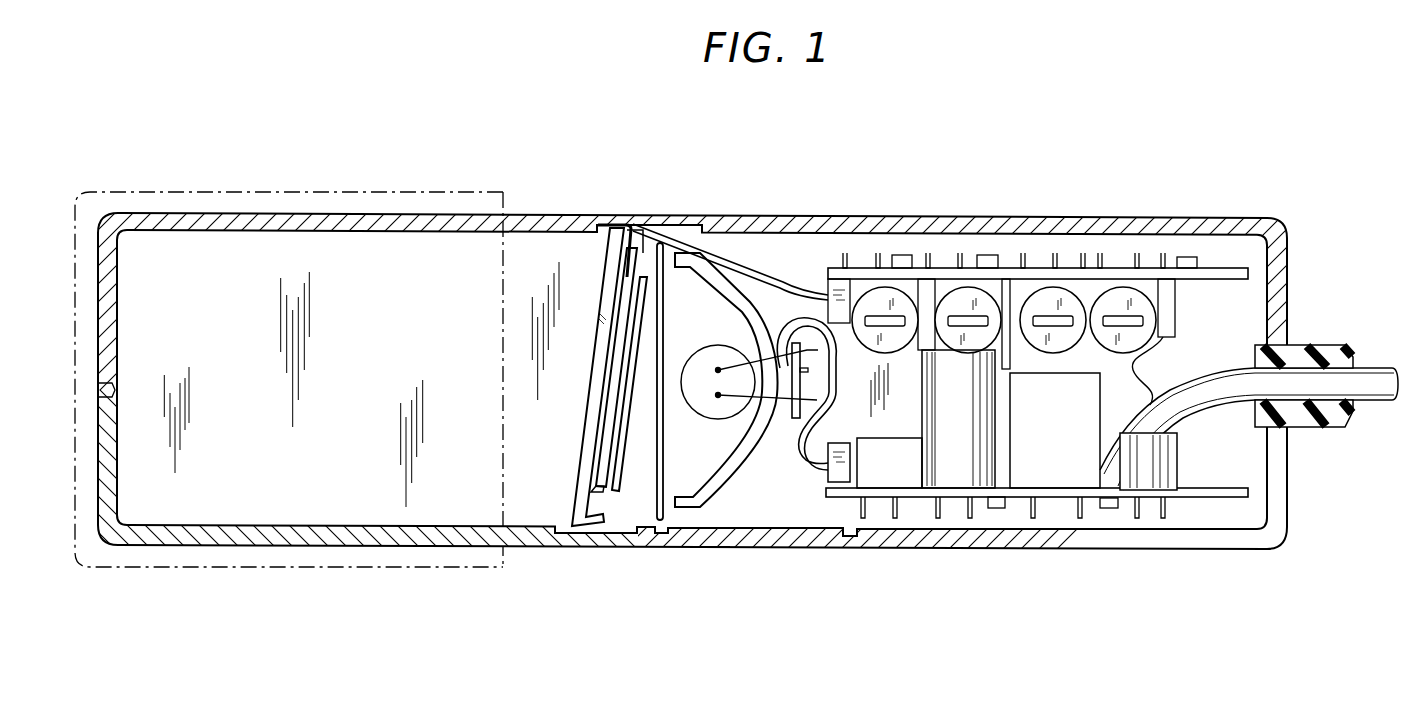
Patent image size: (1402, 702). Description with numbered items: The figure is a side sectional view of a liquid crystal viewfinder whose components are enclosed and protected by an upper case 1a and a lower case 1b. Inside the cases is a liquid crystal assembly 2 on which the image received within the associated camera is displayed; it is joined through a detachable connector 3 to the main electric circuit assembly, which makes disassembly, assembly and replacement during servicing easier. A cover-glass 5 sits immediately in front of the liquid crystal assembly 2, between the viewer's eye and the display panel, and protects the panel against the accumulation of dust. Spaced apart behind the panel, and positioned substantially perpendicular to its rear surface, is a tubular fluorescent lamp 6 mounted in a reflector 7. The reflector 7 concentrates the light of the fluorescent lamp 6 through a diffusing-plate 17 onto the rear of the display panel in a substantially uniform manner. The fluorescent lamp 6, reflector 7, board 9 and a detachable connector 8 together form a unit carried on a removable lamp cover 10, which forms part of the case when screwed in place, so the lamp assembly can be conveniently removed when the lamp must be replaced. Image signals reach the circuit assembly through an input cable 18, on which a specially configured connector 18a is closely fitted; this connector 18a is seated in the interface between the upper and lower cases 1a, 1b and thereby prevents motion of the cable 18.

The upper case 1a is at (549, 213).
The lower case 1b is at (919, 538).
The liquid crystal assembly 2 is at (620, 410).
The detachable connector 3 is at (748, 263).
The cover-glass 5 is at (603, 293).
The tubular fluorescent lamp 6 is at (701, 358).
The reflector 7 is at (747, 307).
The detachable connector 8 is at (810, 462).
The board 9 is at (803, 394).
The removable lamp cover 10 is at (708, 538).
The diffusing-plate 17 is at (657, 498).
The input cable 18 is at (1373, 378).
The connector 18a is at (1313, 355).